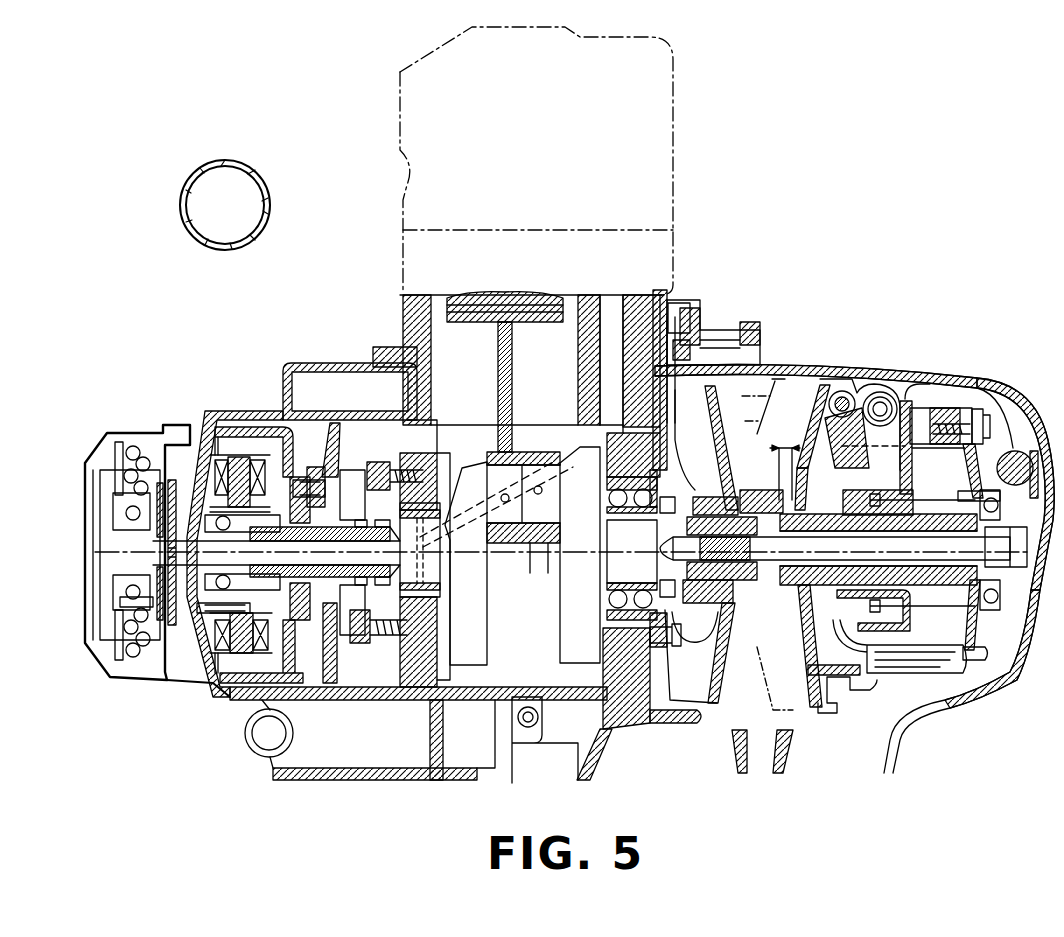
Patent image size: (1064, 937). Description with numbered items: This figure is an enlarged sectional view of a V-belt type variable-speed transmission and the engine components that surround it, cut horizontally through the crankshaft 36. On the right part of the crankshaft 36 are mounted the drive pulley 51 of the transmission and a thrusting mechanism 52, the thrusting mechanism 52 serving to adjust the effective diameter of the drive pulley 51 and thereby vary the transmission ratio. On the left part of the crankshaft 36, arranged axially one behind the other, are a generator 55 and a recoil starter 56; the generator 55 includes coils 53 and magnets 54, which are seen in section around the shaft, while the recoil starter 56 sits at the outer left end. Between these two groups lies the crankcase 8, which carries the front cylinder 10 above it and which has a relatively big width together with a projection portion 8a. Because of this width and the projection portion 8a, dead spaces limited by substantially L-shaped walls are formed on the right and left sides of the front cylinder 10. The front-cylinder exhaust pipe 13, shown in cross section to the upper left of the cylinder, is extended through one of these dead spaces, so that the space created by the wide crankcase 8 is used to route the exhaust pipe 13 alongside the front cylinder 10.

The crankcase 8 is at (365, 700).
The projection portion 8a is at (213, 467).
The front cylinder 10 is at (665, 132).
The front-cylinder exhaust pipe 13 is at (222, 160).
The crankshaft 36 is at (612, 568).
The drive pulley 51 is at (840, 723).
The thrusting mechanism 52 is at (861, 375).
The coils 53 is at (202, 500).
The magnets 54 is at (230, 447).
The generator 55 is at (232, 702).
The recoil starter 56 is at (136, 680).